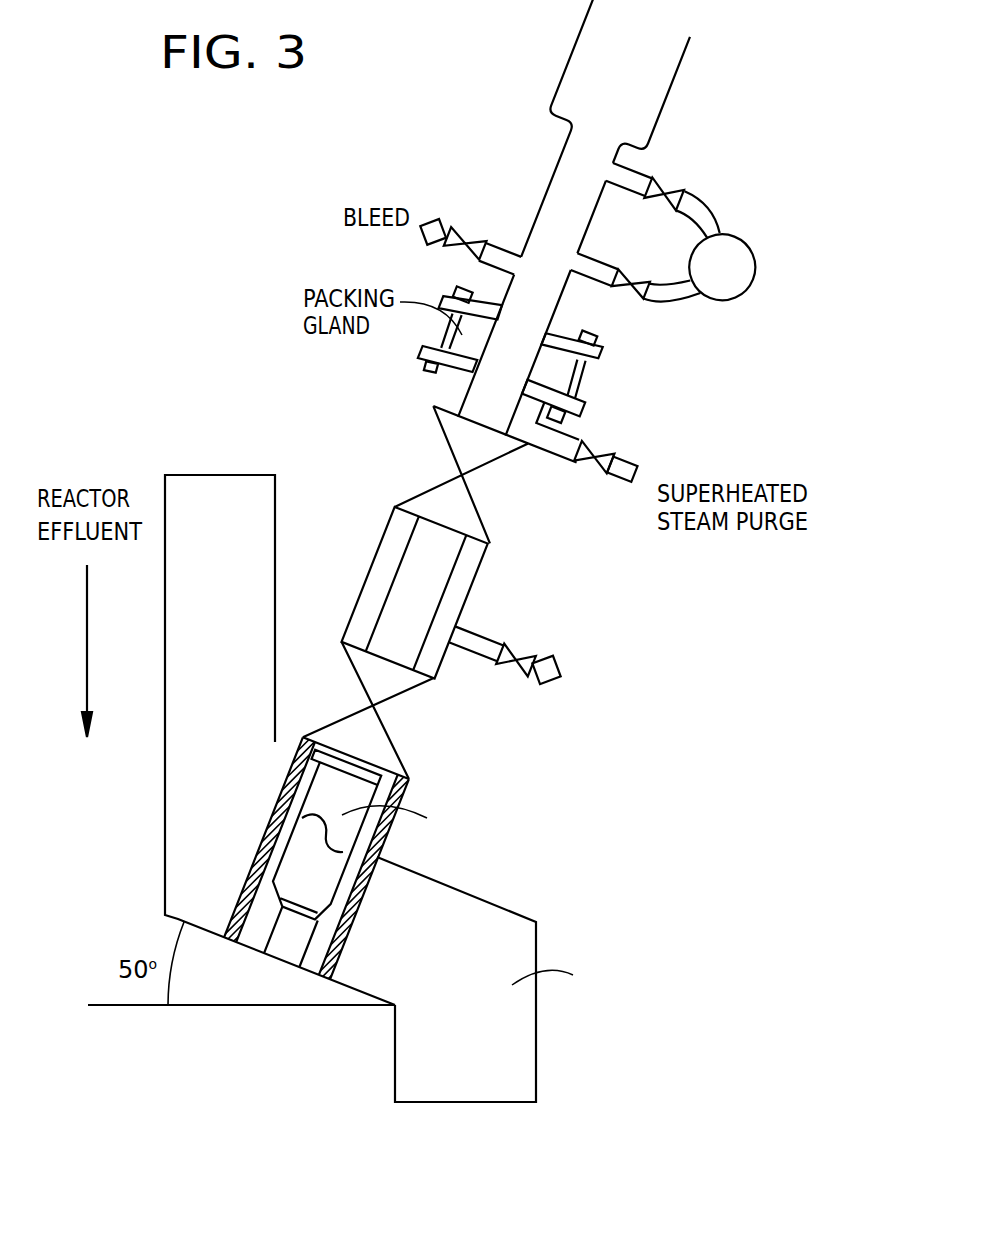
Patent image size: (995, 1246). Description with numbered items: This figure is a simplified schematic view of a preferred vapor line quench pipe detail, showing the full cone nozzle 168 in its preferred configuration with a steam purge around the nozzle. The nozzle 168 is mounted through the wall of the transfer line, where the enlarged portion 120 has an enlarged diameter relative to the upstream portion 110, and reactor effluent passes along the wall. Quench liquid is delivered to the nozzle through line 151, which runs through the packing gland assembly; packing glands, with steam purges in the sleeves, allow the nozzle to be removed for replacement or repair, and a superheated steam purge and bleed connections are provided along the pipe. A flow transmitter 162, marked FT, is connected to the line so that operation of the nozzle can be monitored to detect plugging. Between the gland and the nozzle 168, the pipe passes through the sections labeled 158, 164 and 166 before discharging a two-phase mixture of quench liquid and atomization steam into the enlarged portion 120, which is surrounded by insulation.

The quench liquid line 151 is at (662, 108).
The flow transmitter 162 is at (755, 246).
The upstream portion 110 is at (275, 553).
The nozzle adapter housing 158 is at (497, 455).
The valve body 164 is at (473, 587).
The flexible coupling 166 is at (400, 697).
The full cone nozzle 168 is at (339, 880).
The enlarged portion of the transfer line 120 is at (536, 1043).